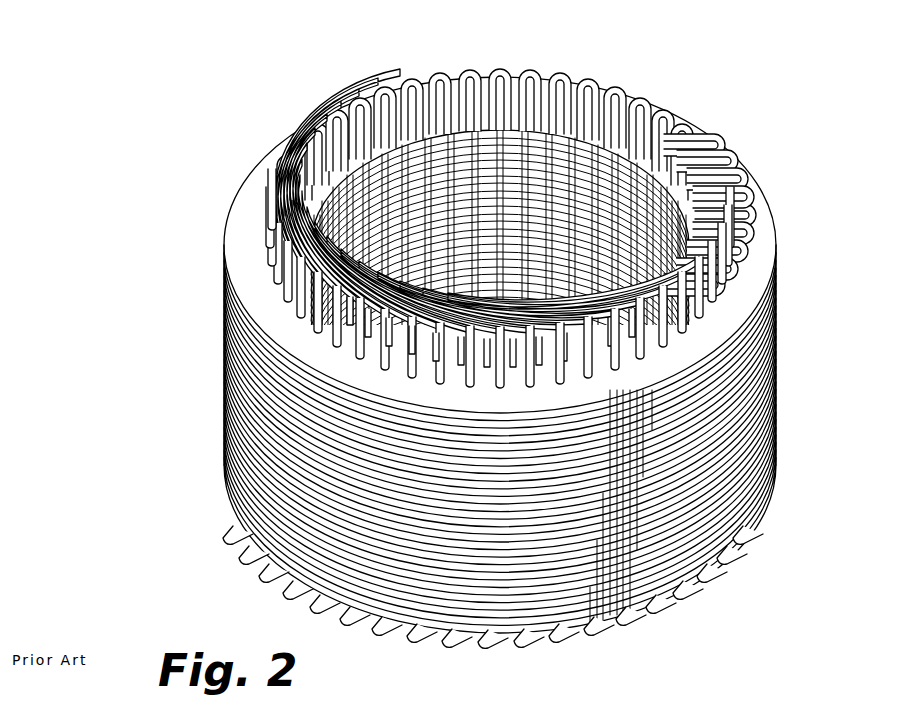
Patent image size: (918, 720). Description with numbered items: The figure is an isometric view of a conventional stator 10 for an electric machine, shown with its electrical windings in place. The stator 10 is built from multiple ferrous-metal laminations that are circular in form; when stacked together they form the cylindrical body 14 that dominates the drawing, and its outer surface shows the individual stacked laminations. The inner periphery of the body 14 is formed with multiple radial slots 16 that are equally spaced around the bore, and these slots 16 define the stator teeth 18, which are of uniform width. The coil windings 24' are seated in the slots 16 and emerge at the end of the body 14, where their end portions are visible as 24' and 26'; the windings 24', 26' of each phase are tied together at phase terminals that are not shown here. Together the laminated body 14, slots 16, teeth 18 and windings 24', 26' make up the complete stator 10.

The stator 10 is at (553, 354).
The cylindrical body 14 is at (528, 335).
The radial slots 16 is at (493, 354).
The stator teeth 18 is at (440, 112).
The coil windings 24' is at (516, 156).
The coil windings 26' is at (493, 609).